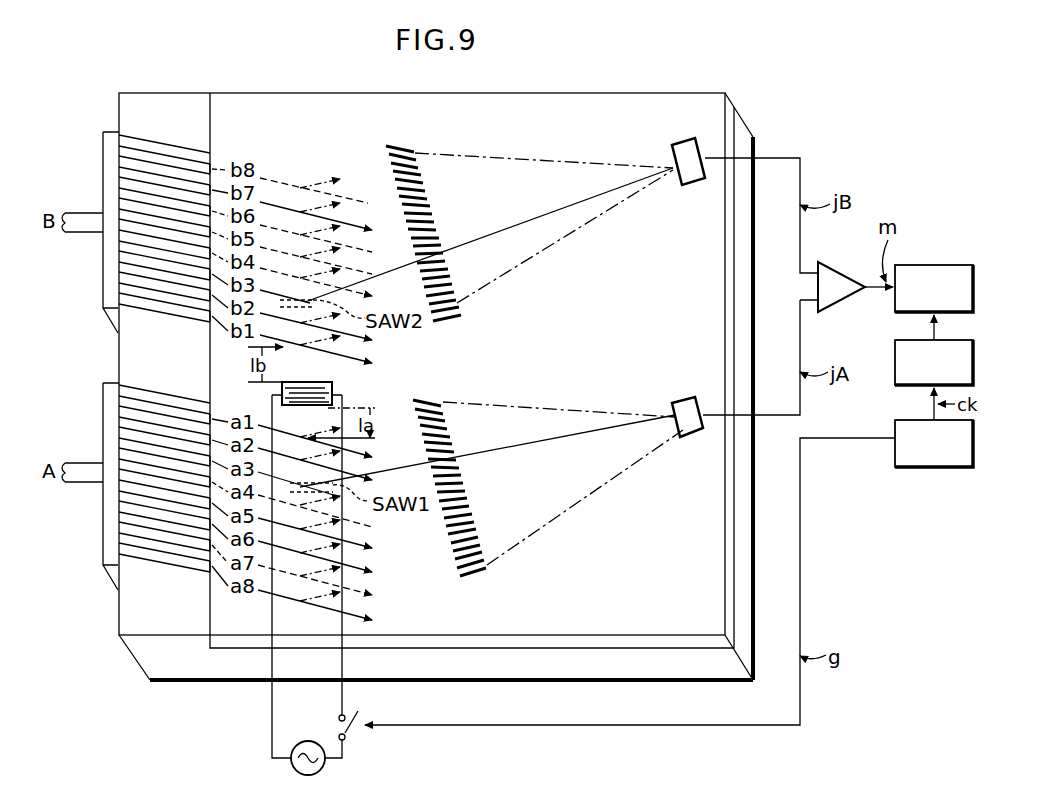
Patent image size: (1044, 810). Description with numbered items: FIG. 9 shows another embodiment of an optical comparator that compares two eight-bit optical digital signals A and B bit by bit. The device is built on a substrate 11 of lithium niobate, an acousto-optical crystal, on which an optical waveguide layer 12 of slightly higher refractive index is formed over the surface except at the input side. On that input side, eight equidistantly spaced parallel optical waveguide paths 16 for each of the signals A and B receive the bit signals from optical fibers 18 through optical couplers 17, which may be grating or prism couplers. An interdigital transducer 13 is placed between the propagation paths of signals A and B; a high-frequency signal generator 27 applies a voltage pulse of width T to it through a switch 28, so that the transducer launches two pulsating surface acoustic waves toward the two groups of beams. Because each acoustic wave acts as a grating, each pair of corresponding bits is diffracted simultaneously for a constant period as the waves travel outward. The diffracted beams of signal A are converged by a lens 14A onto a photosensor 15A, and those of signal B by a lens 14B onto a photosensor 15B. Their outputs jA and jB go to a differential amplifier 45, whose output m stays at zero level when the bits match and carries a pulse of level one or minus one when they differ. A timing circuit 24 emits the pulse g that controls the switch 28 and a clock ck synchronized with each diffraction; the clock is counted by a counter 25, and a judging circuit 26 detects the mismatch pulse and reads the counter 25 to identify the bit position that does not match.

The substrate 11 is at (748, 540).
The optical waveguide layer 12 is at (733, 498).
The interdigital transducer 13 is at (333, 385).
The lens 14A is at (441, 401).
The lens 14B is at (415, 146).
The photosensor 15A is at (681, 400).
The photosensor 15B is at (678, 140).
The optical waveguide paths 16 is at (170, 316).
The optical couplers 17 is at (108, 297).
The optical fibers 18 is at (82, 226).
The timing circuit 24 is at (975, 448).
The counter 25 is at (975, 362).
The judging circuit 26 is at (975, 283).
The high-frequency signal generator 27 is at (291, 769).
The switch 28 is at (372, 727).
The differential amplifier 45 is at (842, 305).